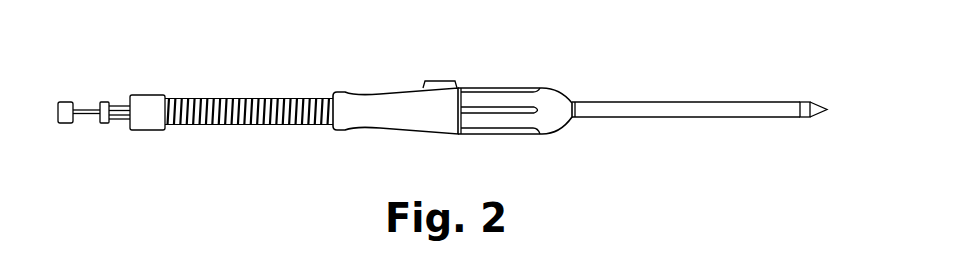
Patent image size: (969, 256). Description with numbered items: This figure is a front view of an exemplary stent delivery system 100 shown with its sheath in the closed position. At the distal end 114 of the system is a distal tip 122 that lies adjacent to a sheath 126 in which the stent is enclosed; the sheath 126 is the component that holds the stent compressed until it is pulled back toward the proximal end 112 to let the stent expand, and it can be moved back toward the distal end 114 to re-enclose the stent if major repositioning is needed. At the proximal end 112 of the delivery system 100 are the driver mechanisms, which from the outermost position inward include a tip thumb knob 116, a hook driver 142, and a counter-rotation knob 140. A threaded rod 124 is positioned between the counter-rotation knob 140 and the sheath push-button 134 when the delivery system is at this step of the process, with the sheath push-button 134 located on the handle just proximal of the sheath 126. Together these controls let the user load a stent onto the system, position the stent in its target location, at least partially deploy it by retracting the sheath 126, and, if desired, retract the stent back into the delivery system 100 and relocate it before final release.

The delivery system 100 is at (610, 71).
The proximal end 112 is at (65, 137).
The distal end 114 is at (808, 130).
The tip thumb knob 116 is at (63, 101).
The distal tip 122 is at (817, 101).
The threaded rod 124 is at (255, 97).
The sheath 126 is at (723, 101).
The sheath push-button 134 is at (441, 80).
The counter-rotation knob 140 is at (152, 100).
The hook driver 142 is at (105, 101).